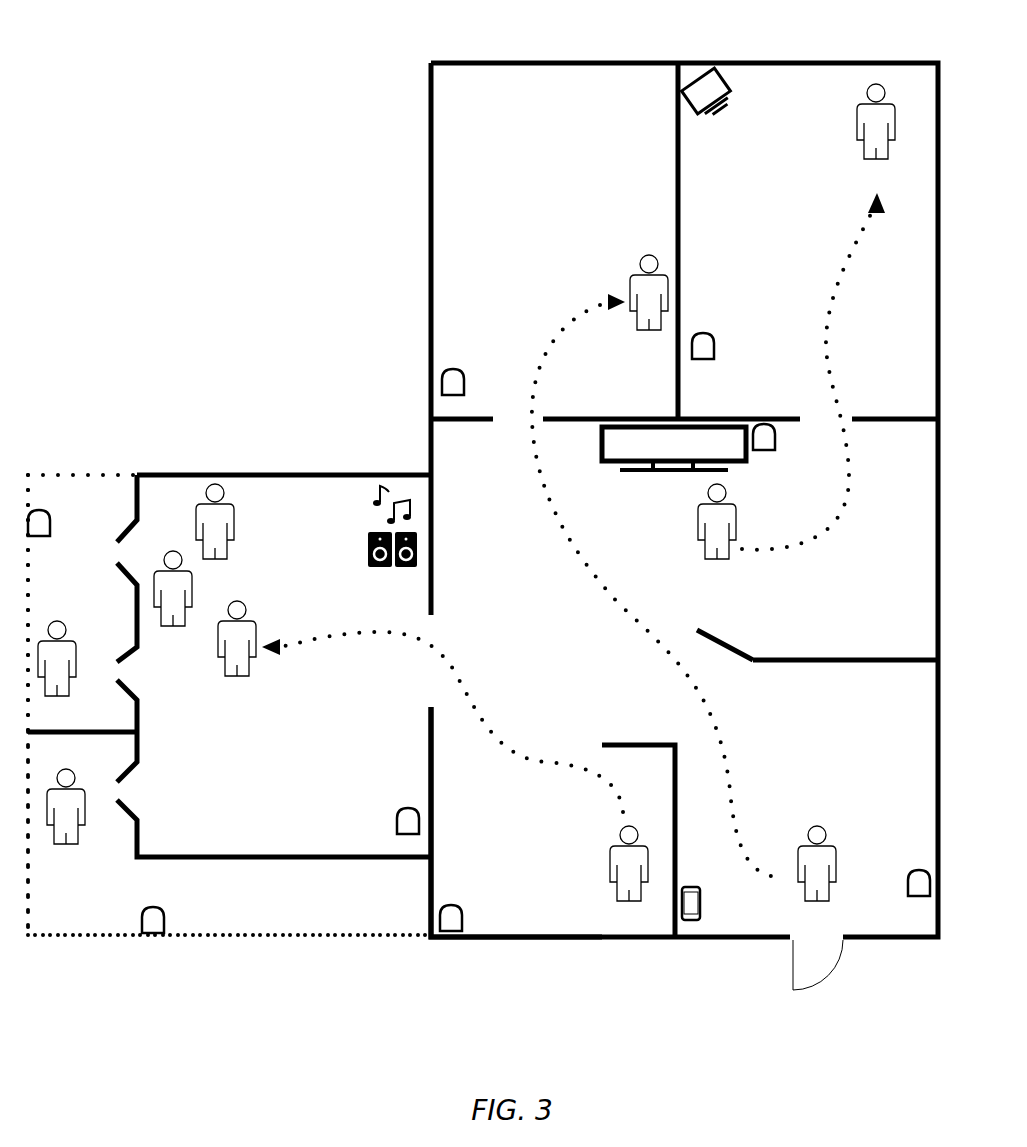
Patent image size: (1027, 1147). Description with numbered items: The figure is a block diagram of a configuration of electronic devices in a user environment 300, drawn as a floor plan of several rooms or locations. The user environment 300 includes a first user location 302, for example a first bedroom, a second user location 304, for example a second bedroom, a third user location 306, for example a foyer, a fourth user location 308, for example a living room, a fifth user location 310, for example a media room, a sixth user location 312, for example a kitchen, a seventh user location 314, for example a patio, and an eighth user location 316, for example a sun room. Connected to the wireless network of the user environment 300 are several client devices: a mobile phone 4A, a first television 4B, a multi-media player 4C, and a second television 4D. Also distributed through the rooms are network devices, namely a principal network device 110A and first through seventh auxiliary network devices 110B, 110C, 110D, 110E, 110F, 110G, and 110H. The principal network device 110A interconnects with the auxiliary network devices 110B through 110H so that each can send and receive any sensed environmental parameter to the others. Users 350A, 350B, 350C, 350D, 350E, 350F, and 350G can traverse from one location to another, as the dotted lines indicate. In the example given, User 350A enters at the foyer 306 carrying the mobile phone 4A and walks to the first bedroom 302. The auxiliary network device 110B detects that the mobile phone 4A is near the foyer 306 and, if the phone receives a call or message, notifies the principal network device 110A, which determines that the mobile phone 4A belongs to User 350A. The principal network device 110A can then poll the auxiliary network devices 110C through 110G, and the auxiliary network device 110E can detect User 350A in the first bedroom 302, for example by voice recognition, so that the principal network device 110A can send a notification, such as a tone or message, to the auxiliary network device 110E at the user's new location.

The user environment 300 is at (224, 28).
The first user location 302 is at (576, 229).
The second user location 304 is at (829, 229).
The third user location 306 is at (826, 804).
The fourth user location 308 is at (681, 552).
The fifth user location 310 is at (361, 694).
The sixth user location 312 is at (571, 844).
The seventh user location 314 is at (93, 600).
The eighth user location 316 is at (93, 915).
The client device 4A is at (701, 904).
The client device 4B is at (731, 90).
The client device 4C is at (384, 532).
The client device 4D is at (598, 444).
The principal network device 110A is at (775, 446).
The auxiliary network device 110B is at (920, 868).
The auxiliary network device 110C is at (461, 906).
The auxiliary network device 110D is at (714, 352).
The auxiliary network device 110E is at (463, 371).
The auxiliary network device 110F is at (399, 808).
The auxiliary network device 110G is at (164, 911).
The auxiliary network device 110H is at (50, 514).
The user 350A is at (687, 594).
The user 350B is at (796, 337).
The user 350C is at (433, 767).
The user 350D is at (215, 538).
The user 350E is at (175, 605).
The user 350F is at (57, 675).
The user 350G is at (66, 824).